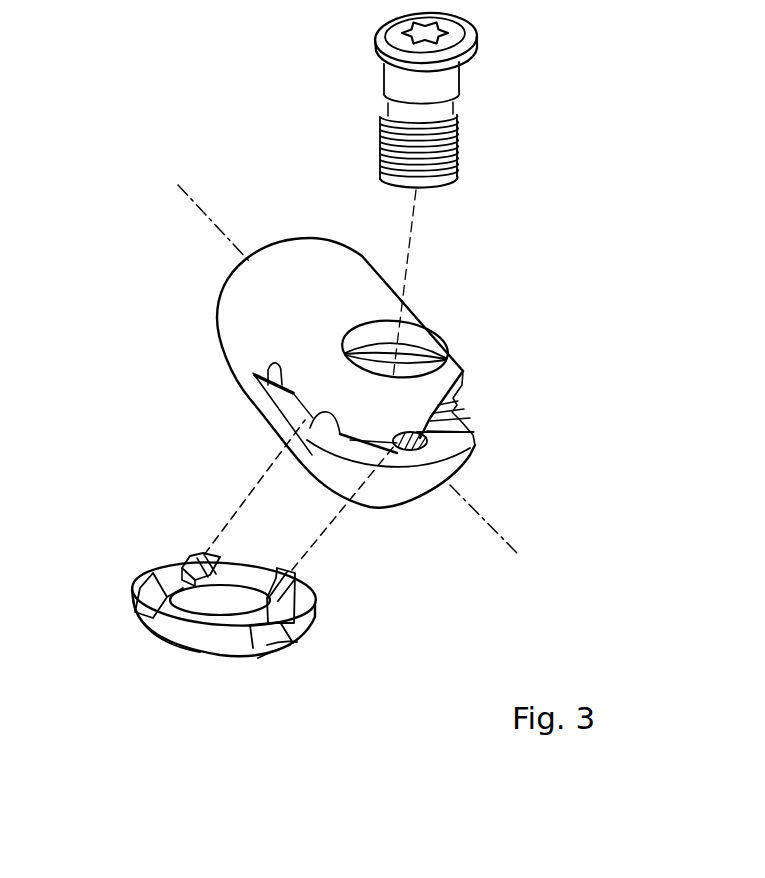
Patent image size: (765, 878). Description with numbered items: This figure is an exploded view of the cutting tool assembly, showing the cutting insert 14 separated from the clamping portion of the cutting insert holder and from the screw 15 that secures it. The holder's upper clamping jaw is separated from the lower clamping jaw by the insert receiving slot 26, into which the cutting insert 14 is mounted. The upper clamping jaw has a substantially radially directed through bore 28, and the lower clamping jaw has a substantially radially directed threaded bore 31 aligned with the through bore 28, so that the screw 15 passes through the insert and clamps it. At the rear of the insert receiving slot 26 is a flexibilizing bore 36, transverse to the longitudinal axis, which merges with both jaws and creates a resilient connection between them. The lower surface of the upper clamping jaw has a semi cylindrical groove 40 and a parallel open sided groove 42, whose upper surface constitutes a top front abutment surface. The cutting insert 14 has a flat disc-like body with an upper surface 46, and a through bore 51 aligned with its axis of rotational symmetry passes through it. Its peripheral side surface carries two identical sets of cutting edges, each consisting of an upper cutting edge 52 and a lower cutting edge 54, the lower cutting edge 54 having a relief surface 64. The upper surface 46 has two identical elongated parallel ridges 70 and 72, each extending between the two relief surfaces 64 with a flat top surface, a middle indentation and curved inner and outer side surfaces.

The cutting insert 14 is at (146, 665).
The screw 15 is at (530, 51).
The insert receiving slot 26 is at (460, 456).
The through bore 28 is at (438, 347).
The threaded bore 31 is at (375, 438).
The flexibilizing bore 36 is at (252, 373).
The semi cylindrical groove 40 is at (312, 421).
The open sided groove 42 is at (404, 451).
The upper surface 46 is at (176, 561).
The through bore 51 is at (227, 600).
The upper cutting edge 52 is at (313, 627).
The lower cutting edge 54 is at (189, 646).
The relief surface 64 is at (172, 633).
The ridge 70 is at (200, 549).
The ridge 72 is at (302, 572).